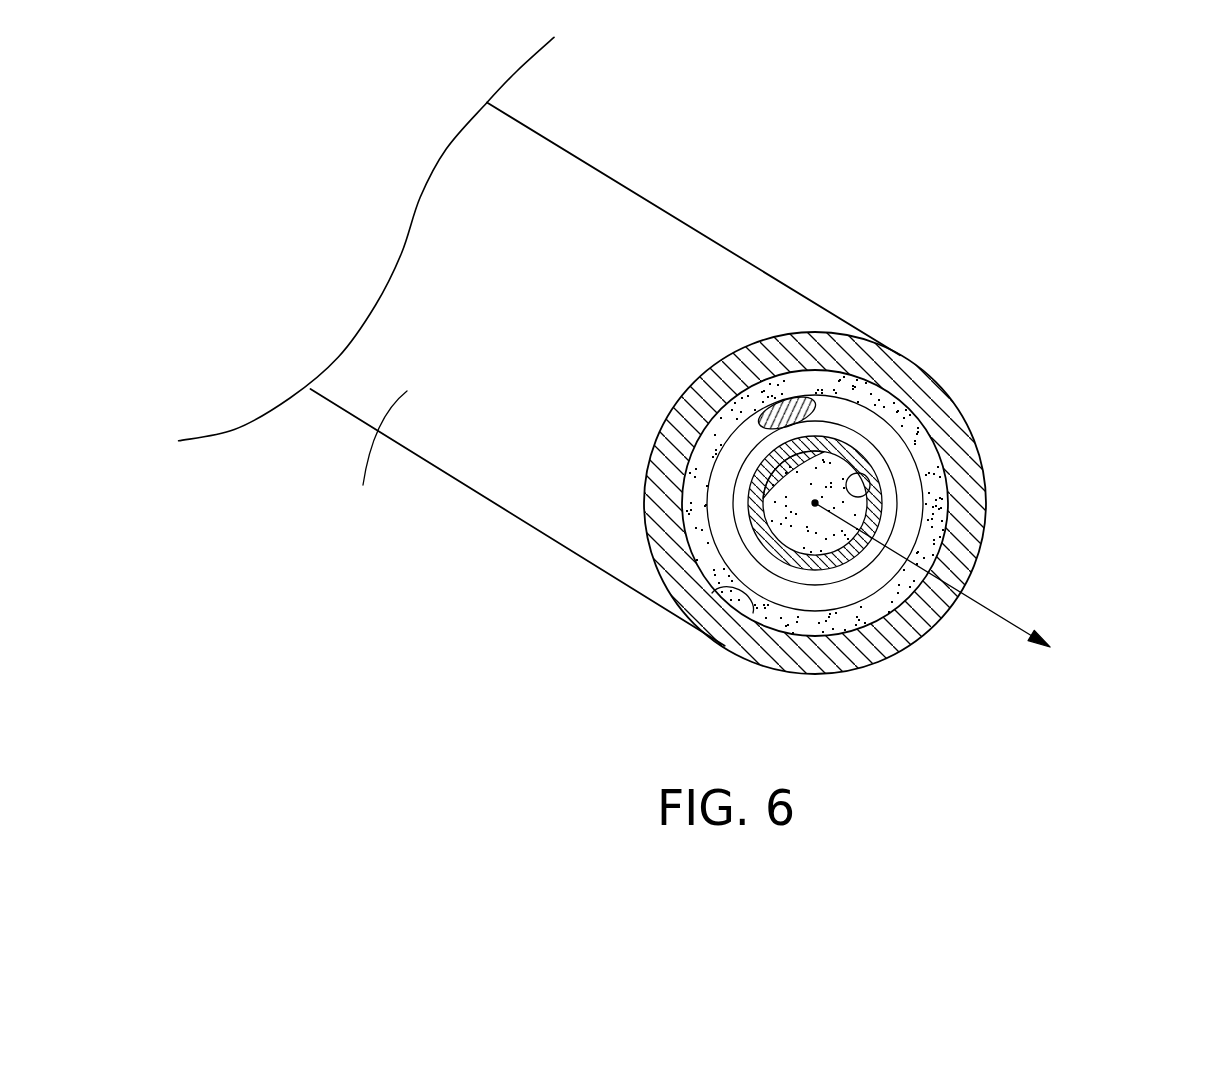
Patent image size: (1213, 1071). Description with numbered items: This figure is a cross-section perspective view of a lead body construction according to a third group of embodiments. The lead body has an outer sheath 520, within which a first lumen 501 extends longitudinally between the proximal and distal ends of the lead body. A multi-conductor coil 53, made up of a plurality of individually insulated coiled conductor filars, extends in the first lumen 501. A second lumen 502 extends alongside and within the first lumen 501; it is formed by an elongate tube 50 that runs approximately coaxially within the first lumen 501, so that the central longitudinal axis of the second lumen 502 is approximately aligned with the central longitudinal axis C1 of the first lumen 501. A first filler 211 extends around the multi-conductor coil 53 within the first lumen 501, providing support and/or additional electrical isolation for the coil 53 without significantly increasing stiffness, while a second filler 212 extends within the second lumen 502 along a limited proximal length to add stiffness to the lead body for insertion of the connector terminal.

The outer sheath 520 is at (783, 357).
The first filler 211 is at (700, 517).
The multi-conductor coil 53 is at (740, 443).
The first lumen 501 is at (752, 611).
The elongate tube 50 is at (837, 440).
The second filler 212 is at (820, 533).
The second lumen 502 is at (817, 503).
The central longitudinal axis of first lumen C1 is at (998, 588).